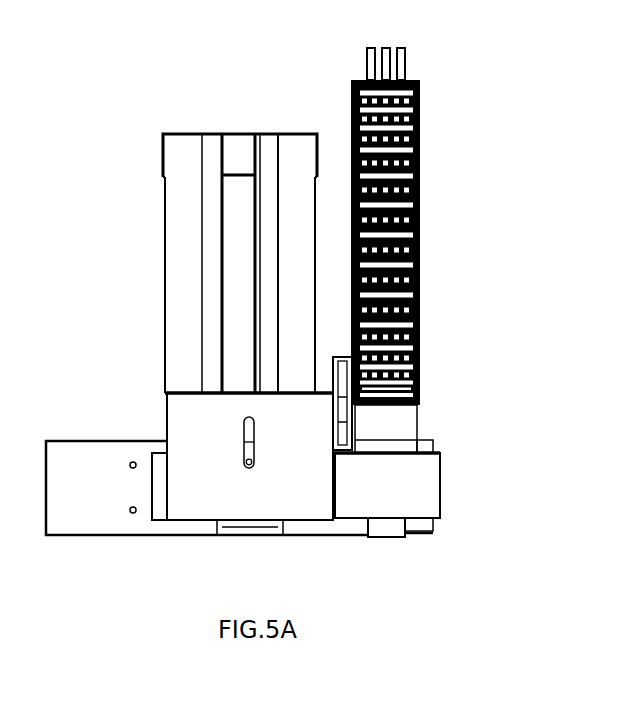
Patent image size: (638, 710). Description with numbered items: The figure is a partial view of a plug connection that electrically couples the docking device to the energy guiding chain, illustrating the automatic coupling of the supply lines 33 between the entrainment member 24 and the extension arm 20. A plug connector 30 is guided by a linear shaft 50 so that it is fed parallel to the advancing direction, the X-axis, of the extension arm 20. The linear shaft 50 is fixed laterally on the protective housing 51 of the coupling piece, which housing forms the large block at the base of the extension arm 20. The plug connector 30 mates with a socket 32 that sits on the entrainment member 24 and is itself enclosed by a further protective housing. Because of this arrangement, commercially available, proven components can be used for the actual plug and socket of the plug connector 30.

The extension arm 20 is at (148, 254).
The entrainment member 24 is at (348, 540).
The plug connector 30 is at (398, 447).
The socket 32 is at (412, 487).
The supply lines 33 is at (402, 61).
The linear shaft 50 is at (340, 373).
The protective housing 51 is at (203, 425).